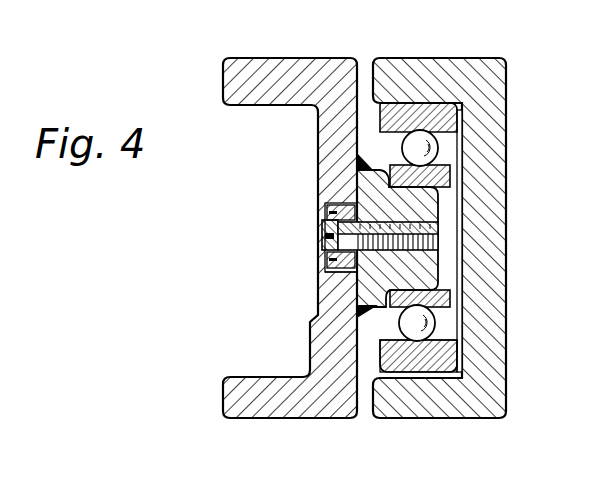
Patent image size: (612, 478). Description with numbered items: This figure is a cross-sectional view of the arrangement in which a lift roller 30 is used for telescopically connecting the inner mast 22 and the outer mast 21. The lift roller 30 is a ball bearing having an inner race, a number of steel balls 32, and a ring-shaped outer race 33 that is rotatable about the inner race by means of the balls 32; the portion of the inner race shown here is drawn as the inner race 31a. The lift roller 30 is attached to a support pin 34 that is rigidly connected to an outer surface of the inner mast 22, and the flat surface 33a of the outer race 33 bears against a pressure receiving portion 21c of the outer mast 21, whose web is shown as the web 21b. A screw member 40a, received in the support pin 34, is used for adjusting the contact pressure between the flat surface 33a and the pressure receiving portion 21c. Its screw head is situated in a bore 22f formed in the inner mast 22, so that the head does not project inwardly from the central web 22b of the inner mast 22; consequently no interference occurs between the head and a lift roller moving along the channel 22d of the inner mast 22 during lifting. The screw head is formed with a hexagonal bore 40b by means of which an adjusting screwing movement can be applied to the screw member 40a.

The inner mast 22 is at (282, 64).
The central web 22b is at (321, 157).
The channel 22d is at (302, 234).
The bore 22f is at (318, 271).
The support pin 34 is at (322, 188).
The screw member 40a is at (441, 225).
The hexagonal bore 40b is at (322, 243).
The outer mast 21 is at (499, 175).
The web of first housing member 21b is at (498, 273).
The pressure receiving portion 21c is at (457, 350).
The lift roller 30 is at (408, 360).
The inner race 31a is at (448, 293).
The steel balls 32 is at (438, 152).
The outer race 33 is at (424, 350).
The flat surface 33a is at (458, 369).